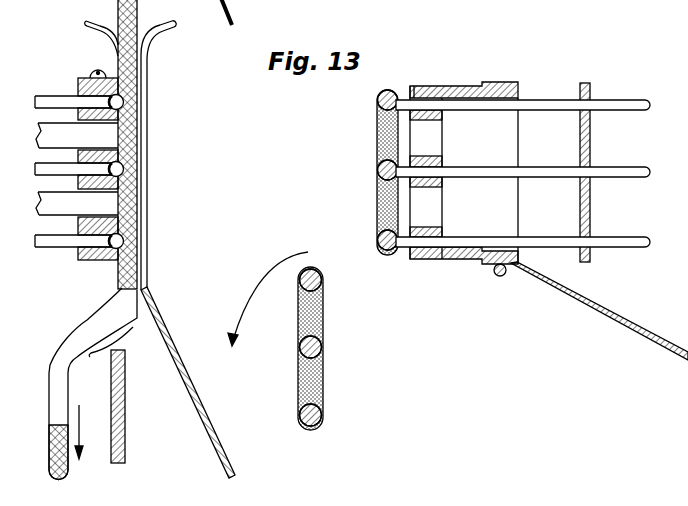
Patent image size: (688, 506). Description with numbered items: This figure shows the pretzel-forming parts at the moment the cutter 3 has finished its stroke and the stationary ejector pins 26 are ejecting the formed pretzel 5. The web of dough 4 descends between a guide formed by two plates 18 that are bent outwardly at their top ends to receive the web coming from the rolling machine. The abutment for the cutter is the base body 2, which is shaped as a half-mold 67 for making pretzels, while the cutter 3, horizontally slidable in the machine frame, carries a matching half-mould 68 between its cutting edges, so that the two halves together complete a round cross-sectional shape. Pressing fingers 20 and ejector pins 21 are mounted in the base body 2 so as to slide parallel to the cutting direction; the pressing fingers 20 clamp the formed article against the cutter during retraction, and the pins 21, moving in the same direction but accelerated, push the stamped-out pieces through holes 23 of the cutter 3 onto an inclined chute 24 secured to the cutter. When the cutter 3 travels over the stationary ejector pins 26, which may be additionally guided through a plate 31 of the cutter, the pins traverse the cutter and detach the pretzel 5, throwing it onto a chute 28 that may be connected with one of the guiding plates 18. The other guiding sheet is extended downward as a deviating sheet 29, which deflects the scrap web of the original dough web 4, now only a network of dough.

The base body 2 is at (82, 78).
The cutter 3 is at (461, 87).
The web of dough 4 is at (137, 13).
The pretzel 5 is at (377, 100).
The guide plates 18 is at (101, 32).
The pressing fingers 20 is at (67, 172).
The ejector pins 21 is at (47, 130).
The holes of the cutter 23 is at (440, 141).
The inclined chute 24 is at (586, 299).
The stationary ejector pins 26 is at (604, 237).
The chute 28 is at (201, 398).
The deviating sheet 29 is at (130, 323).
The plate 31 is at (590, 89).
The half-mold of the base body 67 is at (119, 101).
The half-mould of the cutter 68 is at (414, 87).